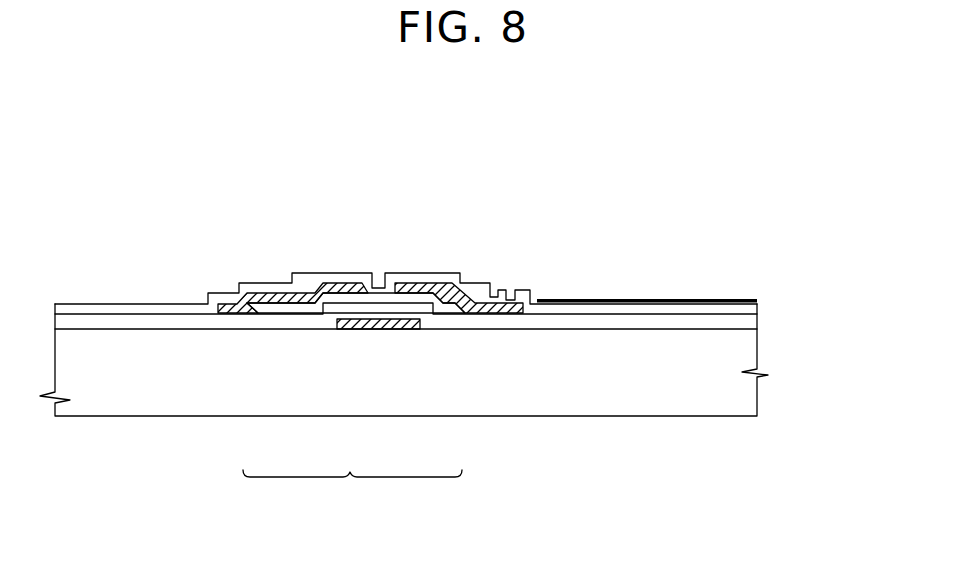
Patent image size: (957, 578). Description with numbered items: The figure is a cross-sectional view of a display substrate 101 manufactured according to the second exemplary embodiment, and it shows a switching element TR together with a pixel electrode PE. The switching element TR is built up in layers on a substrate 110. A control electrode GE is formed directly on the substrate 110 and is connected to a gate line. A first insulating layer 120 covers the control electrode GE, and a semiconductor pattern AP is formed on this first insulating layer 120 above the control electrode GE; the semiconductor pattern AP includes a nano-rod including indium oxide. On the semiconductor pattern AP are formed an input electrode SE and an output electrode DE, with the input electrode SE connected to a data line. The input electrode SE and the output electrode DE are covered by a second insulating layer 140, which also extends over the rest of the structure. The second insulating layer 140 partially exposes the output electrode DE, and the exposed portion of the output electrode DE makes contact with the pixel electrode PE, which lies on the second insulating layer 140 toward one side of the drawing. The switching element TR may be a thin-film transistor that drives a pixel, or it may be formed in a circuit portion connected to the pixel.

The display substrate 101 is at (450, 168).
The substrate 110 is at (750, 399).
The first insulating layer 120 is at (750, 323).
The second insulating layer 140 is at (750, 309).
The pixel electrode PE is at (757, 301).
The control electrode GE is at (360, 320).
The semiconductor pattern AP is at (427, 302).
The input electrode SE is at (272, 303).
The output electrode DE is at (405, 285).
The switching element TR is at (352, 490).